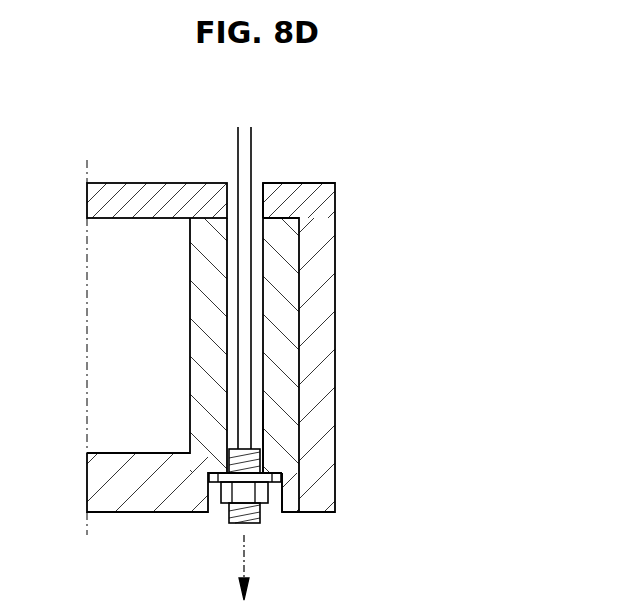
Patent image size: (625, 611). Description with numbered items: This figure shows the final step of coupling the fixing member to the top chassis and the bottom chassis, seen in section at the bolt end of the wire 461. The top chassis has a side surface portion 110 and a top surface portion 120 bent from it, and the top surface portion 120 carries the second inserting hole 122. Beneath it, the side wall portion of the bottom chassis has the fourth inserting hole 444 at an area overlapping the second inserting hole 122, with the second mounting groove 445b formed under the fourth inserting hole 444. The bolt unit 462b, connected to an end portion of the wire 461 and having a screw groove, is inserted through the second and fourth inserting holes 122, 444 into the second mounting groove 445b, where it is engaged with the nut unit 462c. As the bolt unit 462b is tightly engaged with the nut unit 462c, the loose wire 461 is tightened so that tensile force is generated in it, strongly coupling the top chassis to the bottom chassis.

The side surface portion 110 is at (315, 304).
The top surface portion 120 is at (150, 198).
The second inserting hole 122 is at (263, 201).
The wire 461 is at (246, 356).
The fourth inserting hole 444 is at (263, 431).
The second mounting groove 445b is at (283, 494).
The bolt unit 462b is at (247, 517).
The nut unit 462c is at (227, 488).